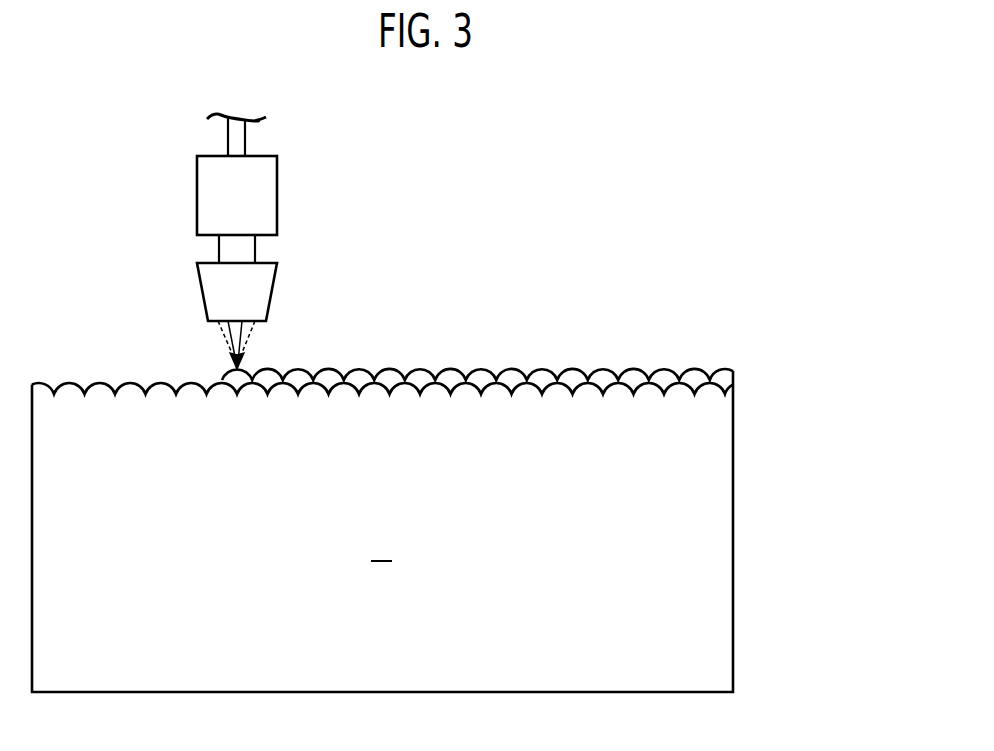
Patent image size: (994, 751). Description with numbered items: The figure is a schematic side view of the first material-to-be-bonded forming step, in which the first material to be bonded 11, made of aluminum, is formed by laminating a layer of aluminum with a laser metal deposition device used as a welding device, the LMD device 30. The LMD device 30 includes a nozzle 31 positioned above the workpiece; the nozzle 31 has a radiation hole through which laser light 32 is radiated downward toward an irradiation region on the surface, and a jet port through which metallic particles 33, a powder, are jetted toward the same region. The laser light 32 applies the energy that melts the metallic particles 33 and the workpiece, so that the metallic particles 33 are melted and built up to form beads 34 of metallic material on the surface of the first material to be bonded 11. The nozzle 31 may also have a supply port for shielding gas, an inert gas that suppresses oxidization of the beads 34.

The first material to be bonded 11 is at (443, 484).
The LMD device 30 is at (262, 241).
The nozzle 31 is at (235, 293).
The laser light 32 is at (237, 332).
The metallic particles 33 is at (223, 339).
The beads 34 is at (647, 378).